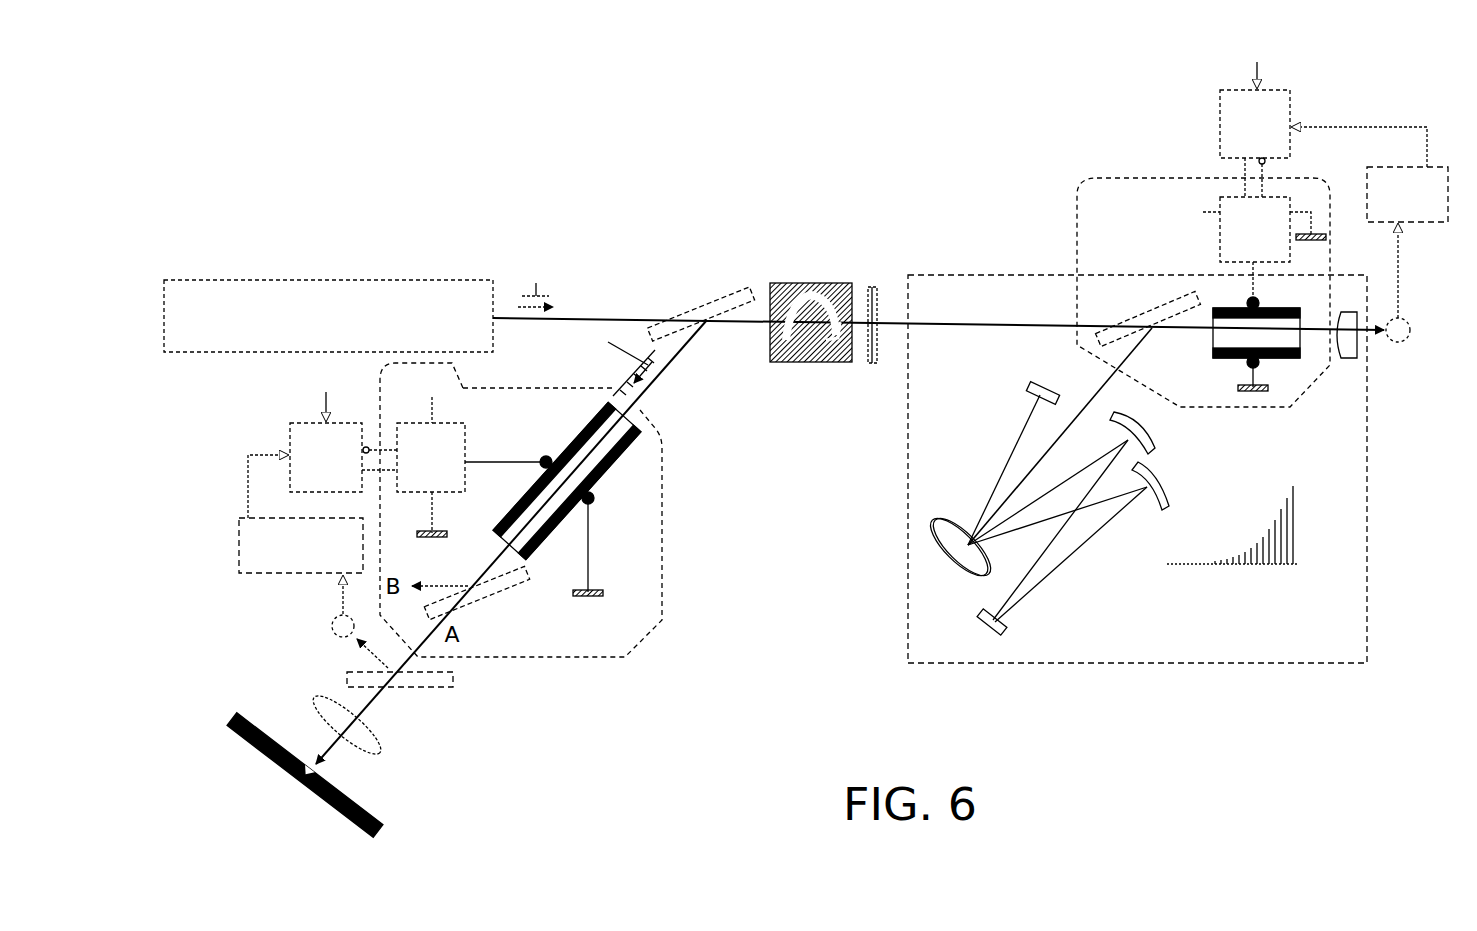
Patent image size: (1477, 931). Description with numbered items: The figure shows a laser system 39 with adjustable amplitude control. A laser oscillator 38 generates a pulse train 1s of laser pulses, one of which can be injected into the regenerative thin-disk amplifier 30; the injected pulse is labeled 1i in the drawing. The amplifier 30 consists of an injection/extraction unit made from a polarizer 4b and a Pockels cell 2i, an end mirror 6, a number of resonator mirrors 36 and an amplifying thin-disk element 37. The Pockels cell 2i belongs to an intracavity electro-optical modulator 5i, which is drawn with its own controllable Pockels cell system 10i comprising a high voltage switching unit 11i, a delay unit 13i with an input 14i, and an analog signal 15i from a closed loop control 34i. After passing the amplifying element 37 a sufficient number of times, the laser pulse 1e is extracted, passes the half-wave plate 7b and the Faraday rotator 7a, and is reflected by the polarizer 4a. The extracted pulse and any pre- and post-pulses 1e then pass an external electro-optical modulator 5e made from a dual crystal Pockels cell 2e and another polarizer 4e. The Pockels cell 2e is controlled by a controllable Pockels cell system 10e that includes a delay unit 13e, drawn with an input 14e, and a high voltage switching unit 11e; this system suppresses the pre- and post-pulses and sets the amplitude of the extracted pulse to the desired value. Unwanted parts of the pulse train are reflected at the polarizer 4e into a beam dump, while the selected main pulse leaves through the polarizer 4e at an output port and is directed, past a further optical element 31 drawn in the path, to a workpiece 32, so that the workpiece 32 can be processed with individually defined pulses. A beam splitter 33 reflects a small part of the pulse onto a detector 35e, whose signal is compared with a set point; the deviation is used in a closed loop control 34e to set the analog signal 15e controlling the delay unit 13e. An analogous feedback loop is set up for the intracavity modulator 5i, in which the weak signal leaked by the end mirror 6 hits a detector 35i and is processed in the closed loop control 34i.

The laser oscillator 38 is at (315, 331).
The laser system 39 is at (470, 165).
The pulse train 1s is at (535, 279).
The polarizer 4a is at (696, 313).
The extracted laser pulse 1e is at (617, 369).
The dual crystal Pockels cell 2e is at (567, 499).
The high voltage switching unit 11e is at (448, 471).
The delay unit 13e is at (309, 471).
The control signal input (extraction) 14e is at (326, 392).
The analog signal 15e is at (262, 471).
The closed loop control 34e is at (283, 559).
The detector 35e is at (342, 622).
The controllable Pockels cell system 10e is at (224, 494).
The external electro-optical modulator 5e is at (600, 643).
The polarizer 4e is at (477, 592).
The beam splitter 33 is at (404, 697).
The focusing lens 31 is at (359, 731).
The workpiece 32 is at (305, 776).
The Faraday rotator 7a is at (811, 307).
The half-wave plate 7b is at (870, 307).
The regenerative thin-disk amplifier 30 is at (1156, 649).
The electro-optical modulator 5i is at (1115, 217).
The polarizer 4b is at (1148, 318).
The Pockels cell 2i is at (1242, 326).
The high voltage driver (injection) 11i is at (1240, 243).
The control unit (injection) 13i is at (1240, 137).
The control signal input (injection) 14i is at (1257, 60).
The feedback signal (injection) 15i is at (1359, 131).
The closed loop control 34i is at (1425, 208).
The detector 35i is at (1420, 289).
The injection modulator unit 10i is at (1409, 110).
The end mirror 6 is at (1347, 351).
The resonator mirrors 36 is at (1071, 511).
The thin-disk element 37 is at (959, 553).
The injected pulse train 1i is at (1232, 545).